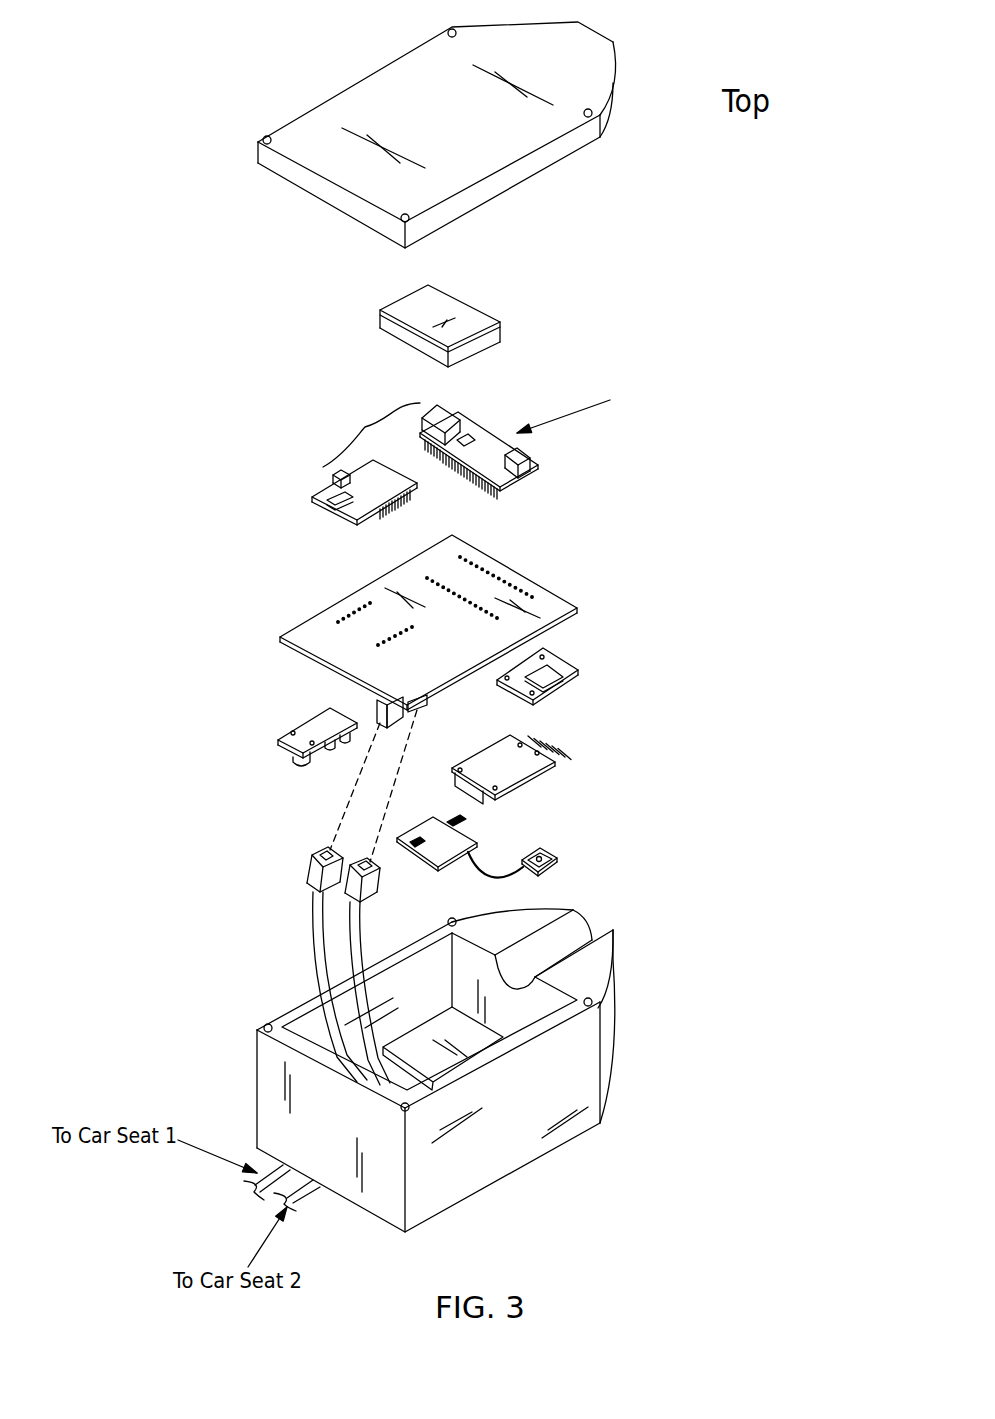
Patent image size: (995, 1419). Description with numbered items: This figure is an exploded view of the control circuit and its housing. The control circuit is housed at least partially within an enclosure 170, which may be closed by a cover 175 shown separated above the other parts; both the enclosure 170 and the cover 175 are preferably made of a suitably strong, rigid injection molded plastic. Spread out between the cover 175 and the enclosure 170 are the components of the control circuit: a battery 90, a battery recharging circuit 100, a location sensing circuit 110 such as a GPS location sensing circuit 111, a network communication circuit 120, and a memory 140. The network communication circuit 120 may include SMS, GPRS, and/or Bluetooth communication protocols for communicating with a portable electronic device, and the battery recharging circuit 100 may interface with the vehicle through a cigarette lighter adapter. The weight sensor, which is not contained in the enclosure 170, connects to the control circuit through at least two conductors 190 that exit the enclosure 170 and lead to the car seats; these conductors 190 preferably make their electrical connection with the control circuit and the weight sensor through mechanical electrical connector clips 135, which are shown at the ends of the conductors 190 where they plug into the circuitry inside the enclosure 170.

The cover 175 is at (517, 133).
The battery 90 is at (480, 345).
The location sensing circuit 110 is at (363, 417).
The GPS location sensing circuit 111 is at (549, 857).
The network communication circuit 120 is at (583, 663).
The battery recharging circuit 100 is at (282, 722).
The mechanical electrical connector clips 135 is at (382, 727).
The memory 140 is at (540, 782).
The conductors 190 is at (315, 925).
The enclosure 170 is at (525, 1110).